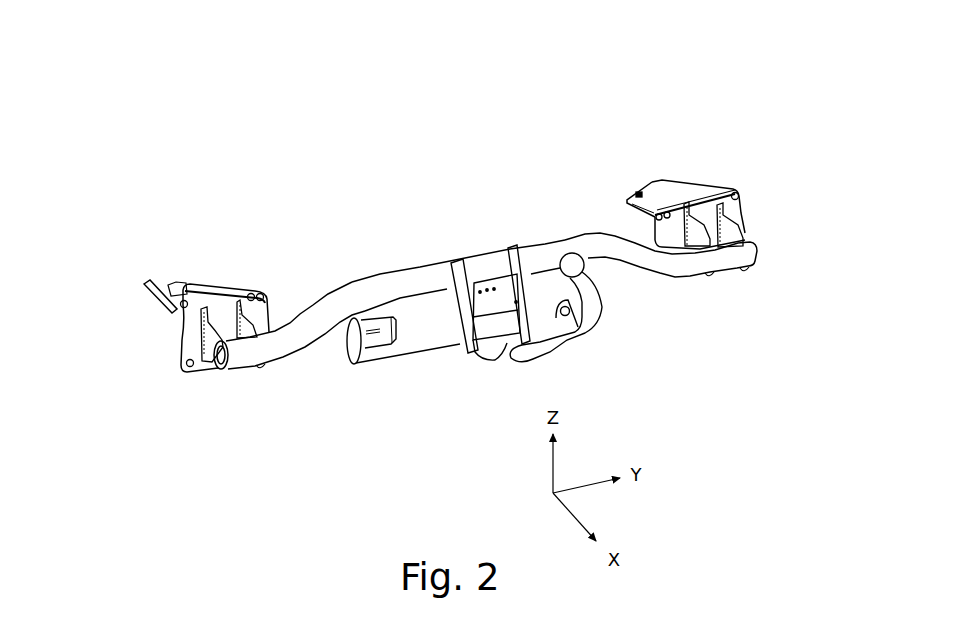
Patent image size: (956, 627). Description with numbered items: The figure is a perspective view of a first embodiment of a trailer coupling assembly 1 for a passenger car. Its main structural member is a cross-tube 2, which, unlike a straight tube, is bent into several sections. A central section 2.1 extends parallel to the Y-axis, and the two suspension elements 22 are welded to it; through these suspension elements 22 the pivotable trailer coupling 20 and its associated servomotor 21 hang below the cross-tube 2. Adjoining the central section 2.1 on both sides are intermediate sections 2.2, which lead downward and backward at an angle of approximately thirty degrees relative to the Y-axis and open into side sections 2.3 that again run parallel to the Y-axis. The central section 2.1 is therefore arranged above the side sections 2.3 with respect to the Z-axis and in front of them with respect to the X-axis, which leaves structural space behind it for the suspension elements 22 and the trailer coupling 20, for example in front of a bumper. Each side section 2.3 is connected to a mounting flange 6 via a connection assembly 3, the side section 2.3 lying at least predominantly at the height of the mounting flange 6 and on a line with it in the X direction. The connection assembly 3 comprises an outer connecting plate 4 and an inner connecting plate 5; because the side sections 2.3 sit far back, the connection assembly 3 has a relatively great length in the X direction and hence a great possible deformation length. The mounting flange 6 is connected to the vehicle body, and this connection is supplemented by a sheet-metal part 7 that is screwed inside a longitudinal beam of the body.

The trailer coupling assembly 1 is at (533, 130).
The cross-tube 2 is at (560, 238).
The central section 2.1 is at (467, 221).
The intermediate sections 2.2 is at (313, 294).
The side sections 2.3 is at (238, 380).
The connection assembly 3 is at (211, 286).
The outer connecting plate 4 is at (209, 364).
The inner connecting plate 5 is at (258, 366).
The mounting flange 6 is at (182, 334).
The sheet-metal part 7 is at (161, 284).
The trailer coupling 20 is at (586, 315).
The servomotor 21 is at (413, 350).
The suspension elements 22 is at (456, 261).